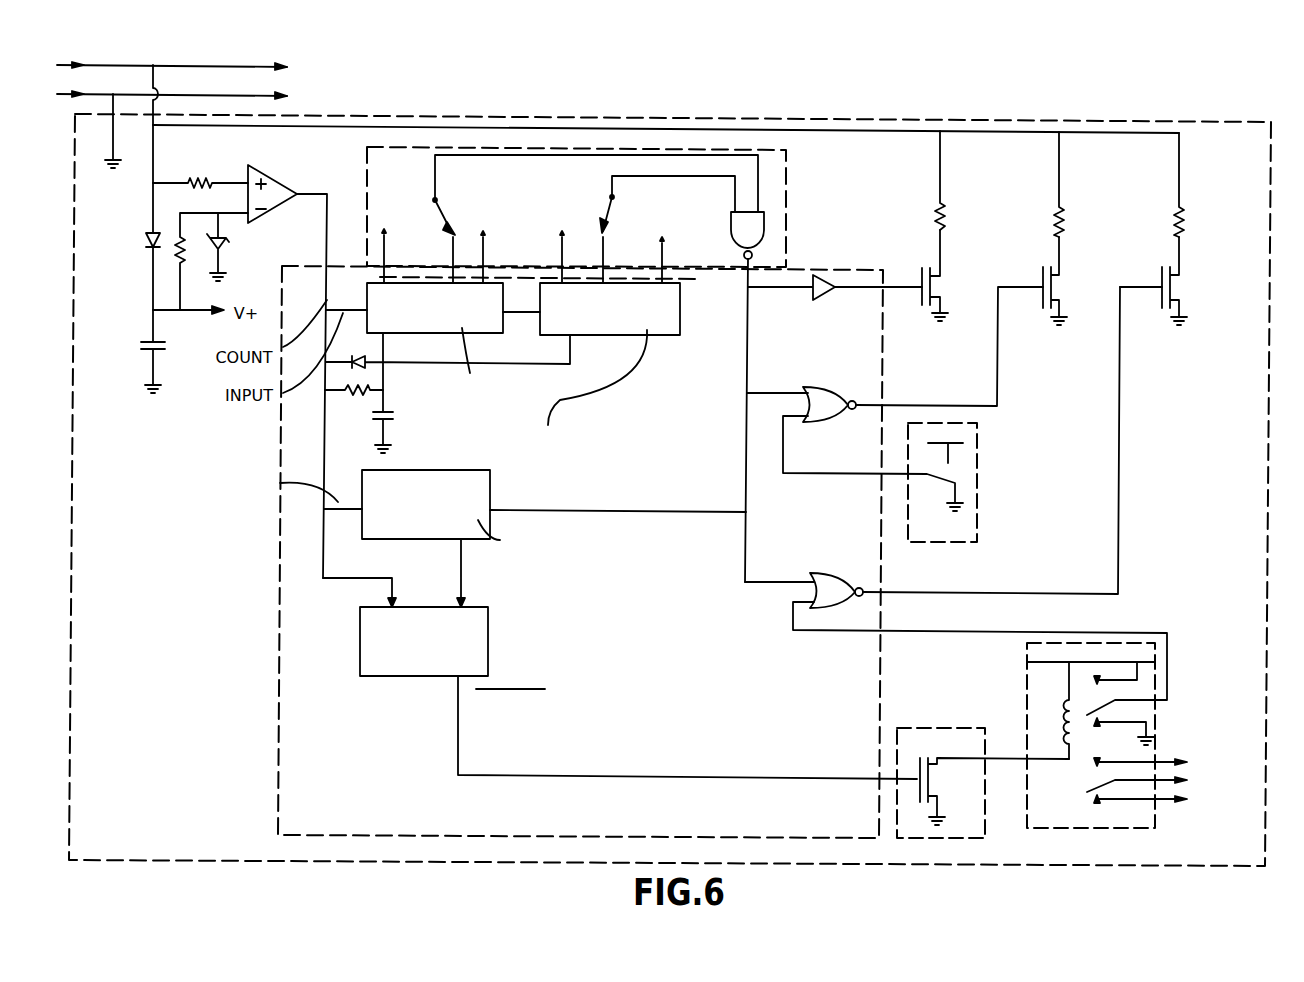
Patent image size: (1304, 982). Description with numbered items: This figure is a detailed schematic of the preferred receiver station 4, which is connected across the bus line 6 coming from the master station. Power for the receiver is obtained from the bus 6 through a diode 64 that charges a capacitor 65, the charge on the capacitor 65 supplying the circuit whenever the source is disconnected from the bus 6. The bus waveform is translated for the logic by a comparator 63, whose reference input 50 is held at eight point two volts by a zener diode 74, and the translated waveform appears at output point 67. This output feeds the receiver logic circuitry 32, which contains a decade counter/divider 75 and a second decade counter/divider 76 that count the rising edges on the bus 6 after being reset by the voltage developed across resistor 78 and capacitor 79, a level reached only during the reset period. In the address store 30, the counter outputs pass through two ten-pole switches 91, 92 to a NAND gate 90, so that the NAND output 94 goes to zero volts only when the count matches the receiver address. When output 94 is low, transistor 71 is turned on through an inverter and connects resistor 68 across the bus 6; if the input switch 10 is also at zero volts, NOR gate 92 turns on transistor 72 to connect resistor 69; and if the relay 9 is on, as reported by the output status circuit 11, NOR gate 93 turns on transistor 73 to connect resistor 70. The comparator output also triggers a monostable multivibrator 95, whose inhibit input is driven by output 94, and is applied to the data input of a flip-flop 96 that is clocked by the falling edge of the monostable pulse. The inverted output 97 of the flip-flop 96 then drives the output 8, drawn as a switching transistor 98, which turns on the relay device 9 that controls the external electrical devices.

The receiver station 4 is at (447, 113).
The bus line 6 is at (222, 65).
The comparator 63 is at (278, 172).
The comparator input 50 is at (218, 212).
The zener diode 74 is at (222, 252).
The diode 64 is at (145, 240).
The capacitor 65 is at (167, 345).
The receiver logic circuitry 32 is at (280, 637).
The comparator output point 67 is at (330, 207).
The address store 30 is at (788, 192).
The decade counter/divider 75 is at (485, 333).
The second decade counter/divider 76 is at (660, 335).
The ten-pole switch / inverter 91 is at (822, 298).
The ten-pole switch / NOR gate 92 is at (830, 388).
The NAND gate 90 is at (765, 243).
The NAND gate output 94 is at (750, 292).
The resistor 68 is at (950, 215).
The transistor 71 is at (940, 290).
The resistor 69 is at (1067, 222).
The transistor 72 is at (1059, 290).
The resistor 70 is at (1187, 222).
The transistor 73 is at (1179, 290).
The input switch 10 is at (977, 430).
The resistor 78 is at (358, 400).
The capacitor 79 is at (393, 421).
The monostable multivibrator 95 is at (457, 470).
The flip-flop 96 is at (490, 645).
The inverted output 97 is at (458, 757).
The NOR gate 93 is at (828, 573).
The output transistor 8 is at (985, 785).
The transistor 98 is at (930, 757).
The output status circuit 11 is at (1118, 633).
The relay device 9 is at (1155, 820).